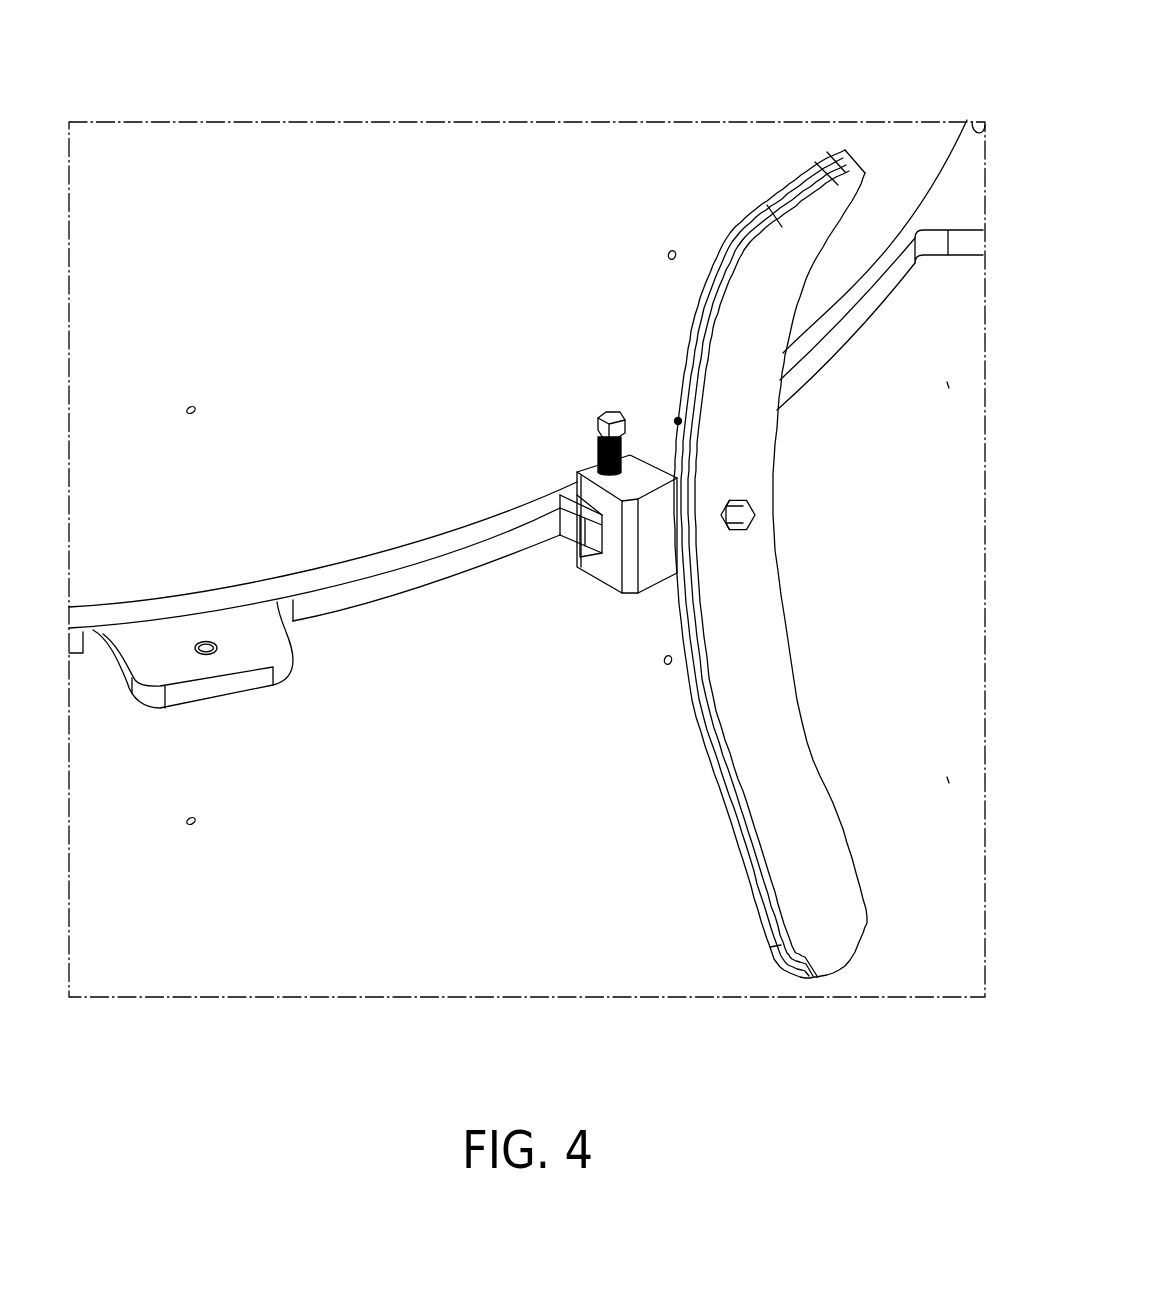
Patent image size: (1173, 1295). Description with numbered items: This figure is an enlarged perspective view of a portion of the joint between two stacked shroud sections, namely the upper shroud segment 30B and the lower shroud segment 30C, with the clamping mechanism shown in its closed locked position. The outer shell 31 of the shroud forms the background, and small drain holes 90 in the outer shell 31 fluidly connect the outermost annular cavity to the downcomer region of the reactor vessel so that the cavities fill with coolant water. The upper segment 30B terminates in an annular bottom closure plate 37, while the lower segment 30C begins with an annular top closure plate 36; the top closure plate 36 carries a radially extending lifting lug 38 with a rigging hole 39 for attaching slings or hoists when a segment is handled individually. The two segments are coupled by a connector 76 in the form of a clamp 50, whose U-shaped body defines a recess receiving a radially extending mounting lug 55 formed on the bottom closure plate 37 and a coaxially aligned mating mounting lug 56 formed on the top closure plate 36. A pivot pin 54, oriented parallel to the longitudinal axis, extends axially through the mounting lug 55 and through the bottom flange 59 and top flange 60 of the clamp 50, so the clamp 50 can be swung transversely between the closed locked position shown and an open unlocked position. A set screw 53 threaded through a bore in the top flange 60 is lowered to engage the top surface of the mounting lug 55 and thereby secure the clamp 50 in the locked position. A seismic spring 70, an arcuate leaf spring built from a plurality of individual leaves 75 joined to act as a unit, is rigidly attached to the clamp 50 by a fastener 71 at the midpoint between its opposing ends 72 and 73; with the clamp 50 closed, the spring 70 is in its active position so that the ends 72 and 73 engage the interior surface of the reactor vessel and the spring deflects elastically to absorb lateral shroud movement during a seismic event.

The outer shell 31 is at (583, 168).
The shroud segment 30B is at (381, 215).
The shroud segment 30C is at (494, 805).
The top closure plate 36 is at (374, 600).
The bottom closure plate 37 is at (317, 567).
The lifting lug 38 is at (240, 700).
The rigging hole 39 is at (205, 655).
The clamp 50 is at (629, 615).
The set screw 53 is at (598, 418).
The pivot pin 54 is at (622, 440).
The mounting lug 55 is at (572, 510).
The mounting lug 56 is at (568, 543).
The bottom flange 59 is at (603, 583).
The top flange 60 is at (658, 442).
The seismic spring 70 is at (797, 752).
The fastener 71 is at (743, 520).
The spring end 72 is at (855, 958).
The spring end 73 is at (813, 168).
The leaf 75 is at (740, 828).
The connector 76 is at (812, 479).
The drain hole 90 is at (194, 406).